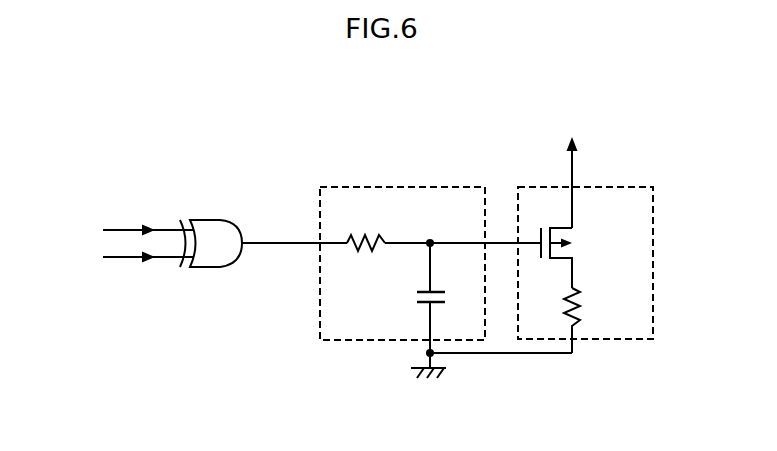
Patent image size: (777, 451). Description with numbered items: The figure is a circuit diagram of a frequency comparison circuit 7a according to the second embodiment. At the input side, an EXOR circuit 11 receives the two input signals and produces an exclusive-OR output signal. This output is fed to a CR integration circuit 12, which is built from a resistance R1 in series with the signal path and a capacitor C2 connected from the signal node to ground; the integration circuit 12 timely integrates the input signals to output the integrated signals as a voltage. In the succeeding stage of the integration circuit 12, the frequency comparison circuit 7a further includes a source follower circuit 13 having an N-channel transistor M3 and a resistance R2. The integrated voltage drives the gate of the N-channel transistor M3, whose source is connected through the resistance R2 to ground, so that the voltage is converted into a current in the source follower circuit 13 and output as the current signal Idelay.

The frequency comparison circuit 7a is at (139, 161).
The EXOR circuit 11 is at (218, 219).
The CR integration circuit 12 is at (450, 187).
The source follower circuit 13 is at (628, 187).
The resistance R1 is at (368, 237).
The capacitor C2 is at (413, 298).
The N-channel transistor M3 is at (565, 233).
The resistance R2 is at (582, 298).